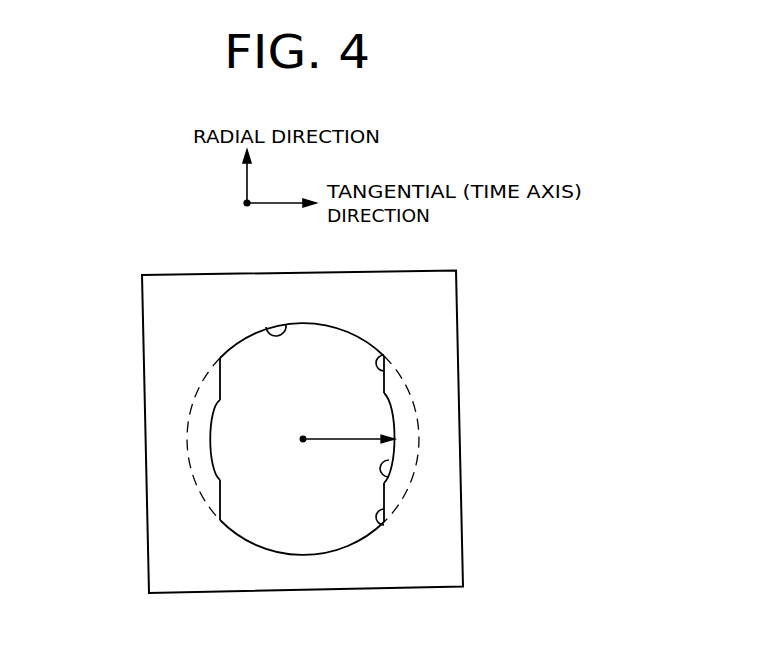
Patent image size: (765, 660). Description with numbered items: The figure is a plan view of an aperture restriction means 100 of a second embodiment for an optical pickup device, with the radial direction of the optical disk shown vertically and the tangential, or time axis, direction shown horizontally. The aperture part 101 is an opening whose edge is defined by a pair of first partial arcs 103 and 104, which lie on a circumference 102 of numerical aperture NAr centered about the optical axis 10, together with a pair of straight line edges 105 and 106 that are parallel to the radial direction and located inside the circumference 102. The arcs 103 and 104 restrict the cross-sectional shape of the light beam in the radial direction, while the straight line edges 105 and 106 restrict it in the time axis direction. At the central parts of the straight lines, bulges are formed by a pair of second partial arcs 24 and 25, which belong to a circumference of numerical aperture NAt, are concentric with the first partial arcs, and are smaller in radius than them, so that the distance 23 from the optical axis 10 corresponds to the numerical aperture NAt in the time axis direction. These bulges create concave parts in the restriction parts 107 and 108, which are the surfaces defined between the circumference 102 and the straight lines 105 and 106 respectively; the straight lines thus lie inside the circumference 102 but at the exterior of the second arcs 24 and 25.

The optical axis 10 is at (303, 437).
The distance 23 is at (346, 438).
The partial arc 24 is at (387, 473).
The partial arc 25 is at (213, 437).
The aperture restriction means 100 is at (459, 283).
The aperture part 101 is at (320, 512).
The circumference 102 is at (417, 451).
The arc 103 is at (267, 327).
The arc 104 is at (284, 551).
The line segment 105 is at (384, 355).
The line segment 106 is at (223, 380).
The restriction part 107 is at (407, 415).
The restriction part 108 is at (203, 415).